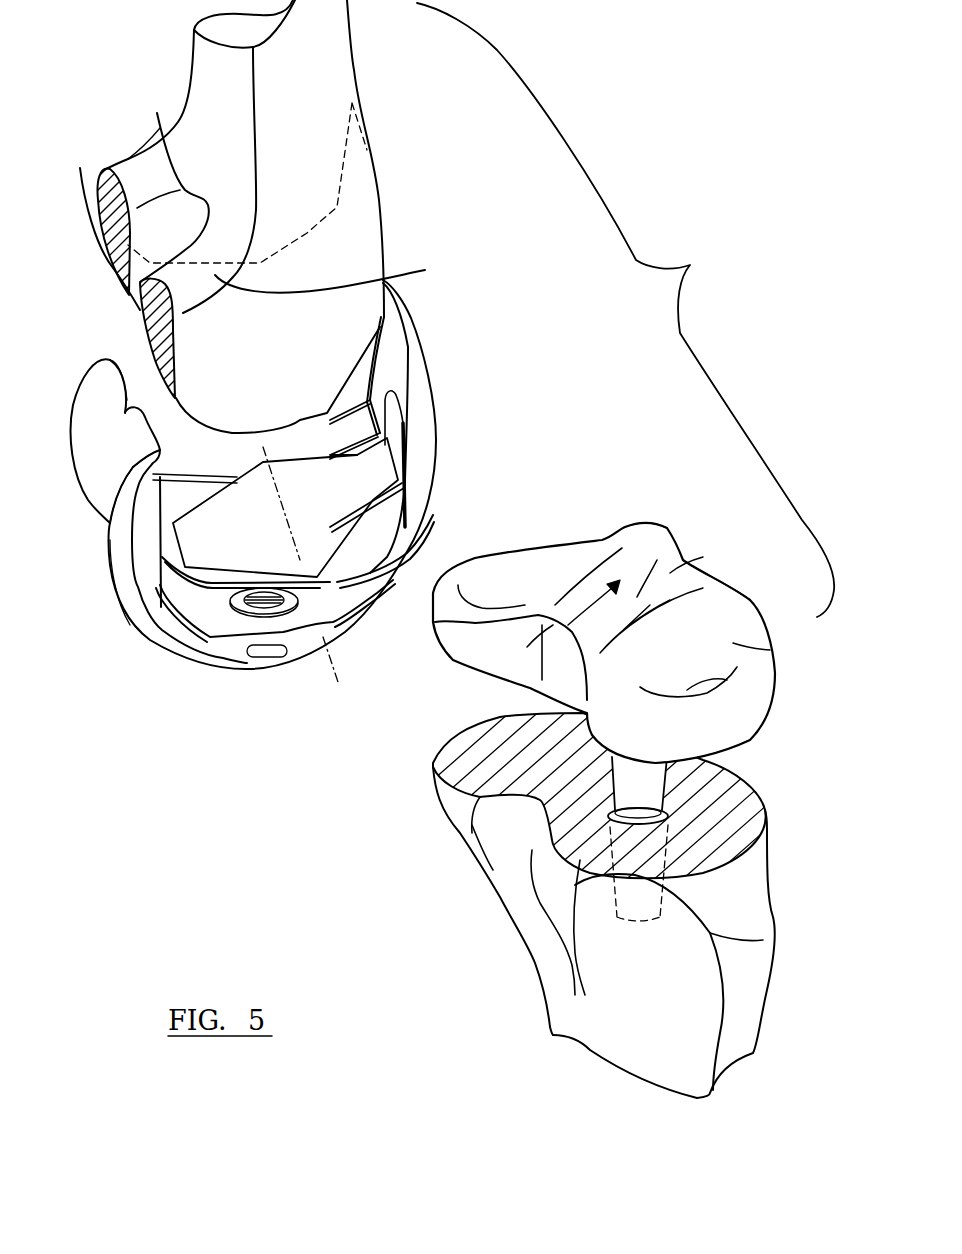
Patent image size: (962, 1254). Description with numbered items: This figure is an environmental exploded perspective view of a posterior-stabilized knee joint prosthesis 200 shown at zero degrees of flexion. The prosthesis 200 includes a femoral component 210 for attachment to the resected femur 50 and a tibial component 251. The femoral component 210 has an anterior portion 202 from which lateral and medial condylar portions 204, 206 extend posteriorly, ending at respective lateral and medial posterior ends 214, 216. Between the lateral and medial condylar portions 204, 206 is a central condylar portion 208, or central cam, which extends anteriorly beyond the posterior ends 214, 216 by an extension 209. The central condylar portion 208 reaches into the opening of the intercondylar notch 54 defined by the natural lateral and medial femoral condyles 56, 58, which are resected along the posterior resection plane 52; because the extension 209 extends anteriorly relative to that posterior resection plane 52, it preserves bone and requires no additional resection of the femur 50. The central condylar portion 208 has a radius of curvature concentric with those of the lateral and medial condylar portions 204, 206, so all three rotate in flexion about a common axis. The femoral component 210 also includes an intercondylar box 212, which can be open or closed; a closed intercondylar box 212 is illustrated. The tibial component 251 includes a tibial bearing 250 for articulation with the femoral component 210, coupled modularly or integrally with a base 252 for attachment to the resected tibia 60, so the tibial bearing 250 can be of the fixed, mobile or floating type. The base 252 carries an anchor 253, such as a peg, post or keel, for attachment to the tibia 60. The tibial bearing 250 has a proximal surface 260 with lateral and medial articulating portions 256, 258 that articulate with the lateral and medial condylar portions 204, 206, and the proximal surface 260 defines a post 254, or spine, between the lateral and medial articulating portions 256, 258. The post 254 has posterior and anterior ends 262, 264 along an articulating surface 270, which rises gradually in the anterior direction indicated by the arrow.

The resected femur 50 is at (325, 78).
The posterior resection plane 52 is at (107, 210).
The intercondylar notch 54 is at (173, 185).
The natural lateral femoral condyle 56 is at (137, 158).
The natural medial femoral condyle 58 is at (330, 275).
The resected tibia 60 is at (740, 900).
The posterior-stabilized knee joint prosthesis 200 is at (625, 310).
The anterior portion 202 is at (399, 416).
The lateral condylar portion 204 is at (77, 447).
The medial condylar portion 206 is at (120, 565).
The central condylar portion 208 is at (113, 490).
The extension 209 is at (110, 523).
The femoral component 210 is at (447, 358).
The intercondylar box 212 is at (310, 493).
The lateral posterior end 214 is at (112, 352).
The medial posterior end 216 is at (155, 473).
The tibial bearing 250 is at (733, 617).
The tibial component 251 is at (740, 572).
The base 252 is at (730, 730).
The anchor 253 is at (657, 790).
The post 254 is at (670, 573).
The lateral articulating portion 256 is at (488, 578).
The medial articulating portion 258 is at (727, 680).
The proximal surface 260 is at (770, 650).
The posterior end 262 is at (527, 647).
The anterior end 264 is at (635, 553).
The articulating surface 270 is at (625, 545).